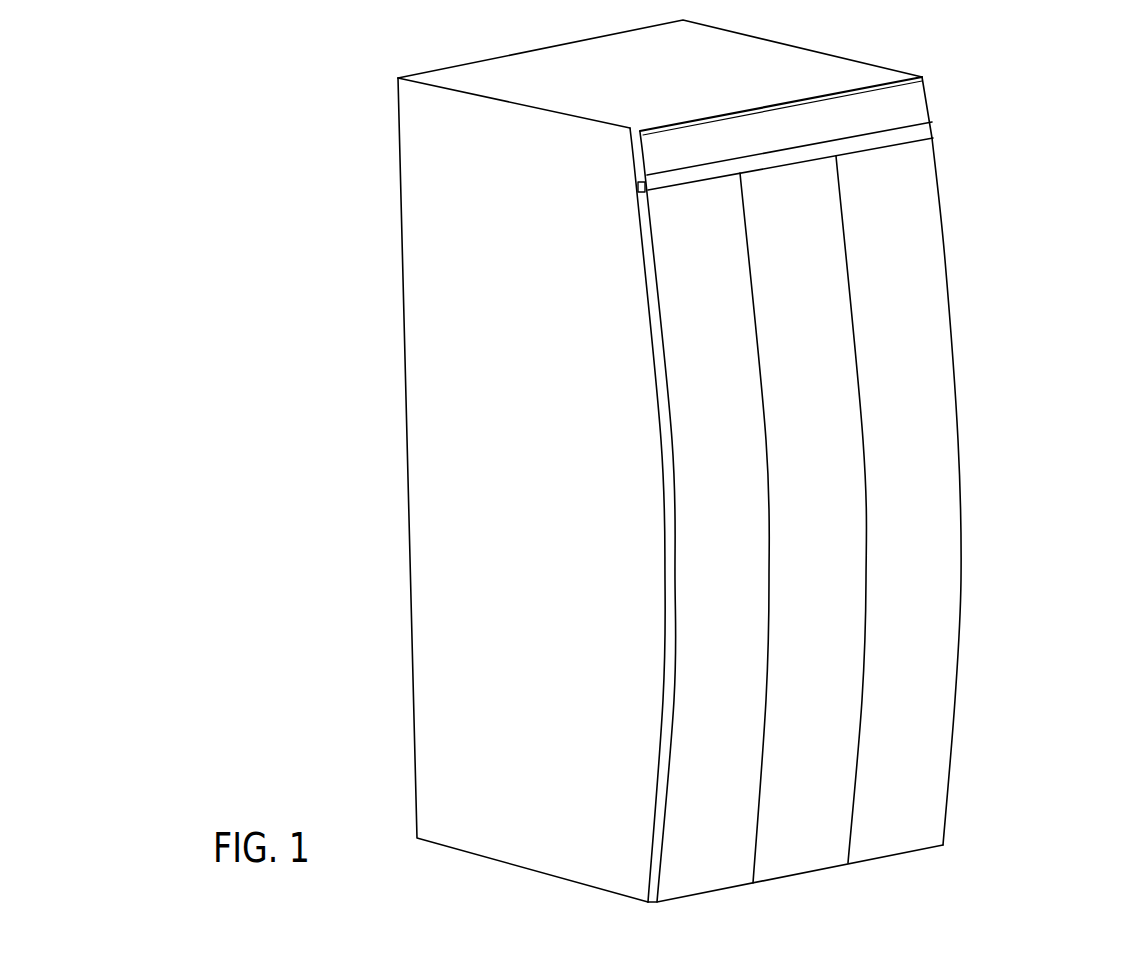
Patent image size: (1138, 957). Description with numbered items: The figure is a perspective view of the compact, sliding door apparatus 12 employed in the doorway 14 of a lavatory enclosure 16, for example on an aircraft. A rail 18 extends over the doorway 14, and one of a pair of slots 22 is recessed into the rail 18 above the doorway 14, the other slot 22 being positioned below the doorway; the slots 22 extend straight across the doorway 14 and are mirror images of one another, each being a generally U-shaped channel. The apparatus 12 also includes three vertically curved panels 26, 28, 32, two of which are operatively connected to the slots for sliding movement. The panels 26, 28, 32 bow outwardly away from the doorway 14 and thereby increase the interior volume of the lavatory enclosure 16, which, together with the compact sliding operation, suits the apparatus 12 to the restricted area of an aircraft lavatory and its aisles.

The compact, sliding door apparatus 12 is at (1040, 157).
The doorway 14 is at (965, 647).
The lavatory enclosure 16 is at (430, 385).
The rail 18 is at (907, 102).
The slot 22 is at (638, 192).
The vertically curved panel 26 is at (933, 490).
The vertically curved panel 28 is at (833, 577).
The vertically curved panel 32 is at (735, 663).